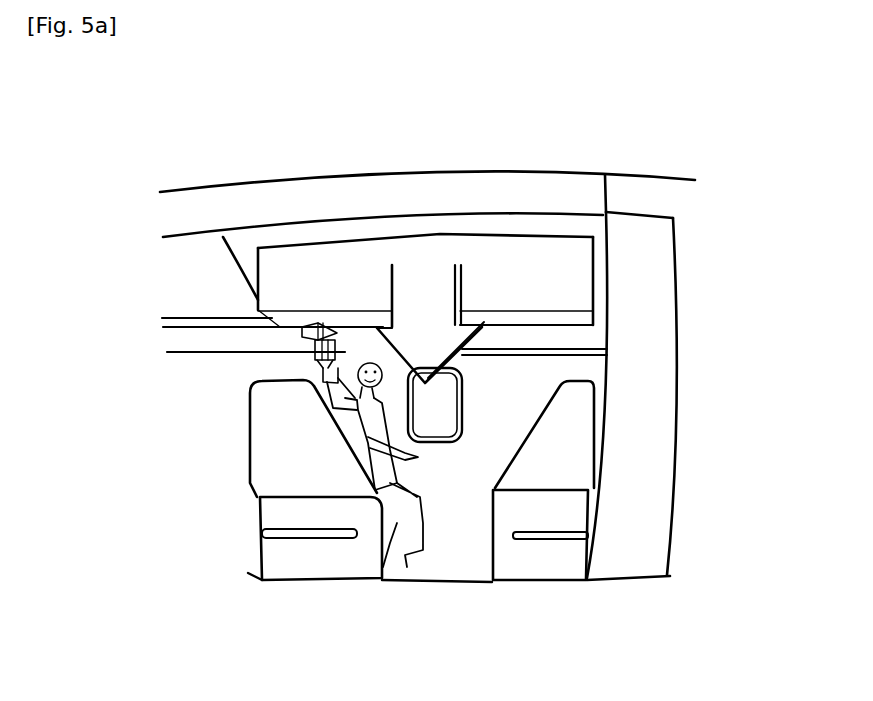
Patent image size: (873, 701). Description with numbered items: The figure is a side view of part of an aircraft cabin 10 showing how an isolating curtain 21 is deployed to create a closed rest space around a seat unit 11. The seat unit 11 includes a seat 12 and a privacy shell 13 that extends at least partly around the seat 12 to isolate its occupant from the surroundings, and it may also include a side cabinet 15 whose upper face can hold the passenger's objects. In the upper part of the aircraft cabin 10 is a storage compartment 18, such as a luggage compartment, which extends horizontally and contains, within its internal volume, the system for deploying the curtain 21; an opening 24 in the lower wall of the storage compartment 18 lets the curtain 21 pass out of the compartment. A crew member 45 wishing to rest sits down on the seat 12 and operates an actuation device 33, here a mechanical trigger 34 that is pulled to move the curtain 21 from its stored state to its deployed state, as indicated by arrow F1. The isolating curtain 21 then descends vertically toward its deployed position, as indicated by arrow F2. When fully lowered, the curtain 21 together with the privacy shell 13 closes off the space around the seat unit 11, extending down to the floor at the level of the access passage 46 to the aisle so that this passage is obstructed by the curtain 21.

The aircraft cabin 10 is at (170, 163).
The seat unit 11 is at (243, 373).
The seat 12 is at (400, 470).
The privacy shell 13 is at (267, 405).
The side cabinet 15 is at (283, 513).
The storage compartment 18 is at (238, 213).
The isolating curtain 21 is at (548, 210).
The opening 24 is at (338, 240).
The actuation device 33 is at (328, 315).
The trigger 34 is at (317, 347).
The crew member 45 is at (353, 430).
The access passage 46 is at (477, 588).
The arrow F1 is at (345, 347).
The arrow F2 is at (523, 258).